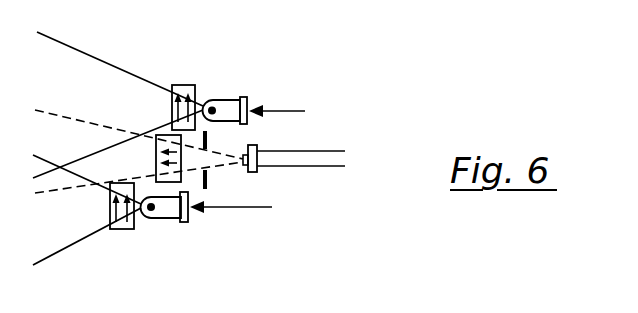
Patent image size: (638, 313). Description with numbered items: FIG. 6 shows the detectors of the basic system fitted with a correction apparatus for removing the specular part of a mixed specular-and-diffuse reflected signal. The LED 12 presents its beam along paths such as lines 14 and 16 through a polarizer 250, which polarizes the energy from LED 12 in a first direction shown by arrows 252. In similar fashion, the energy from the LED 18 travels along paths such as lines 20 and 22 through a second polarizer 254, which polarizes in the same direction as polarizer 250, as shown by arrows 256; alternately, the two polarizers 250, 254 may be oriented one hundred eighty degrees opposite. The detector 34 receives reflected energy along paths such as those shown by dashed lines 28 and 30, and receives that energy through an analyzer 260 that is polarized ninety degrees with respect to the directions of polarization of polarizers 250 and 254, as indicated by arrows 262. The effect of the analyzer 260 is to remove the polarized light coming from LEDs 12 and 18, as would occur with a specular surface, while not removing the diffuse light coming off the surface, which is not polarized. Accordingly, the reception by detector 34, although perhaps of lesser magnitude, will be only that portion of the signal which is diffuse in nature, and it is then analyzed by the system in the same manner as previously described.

The LED 12 is at (171, 219).
The line 14 is at (40, 157).
The line 16 is at (68, 252).
The LED 18 is at (226, 99).
The line 20 is at (68, 44).
The line 22 is at (105, 150).
The dashed line 28 is at (43, 108).
The dashed line 30 is at (50, 196).
The detector 34 is at (252, 145).
The polarizer 250 is at (122, 230).
The arrows 252 is at (110, 215).
The second polarizer 254 is at (186, 85).
The arrows 256 is at (173, 112).
The analyzer 260 is at (157, 165).
The arrows 262 is at (183, 157).